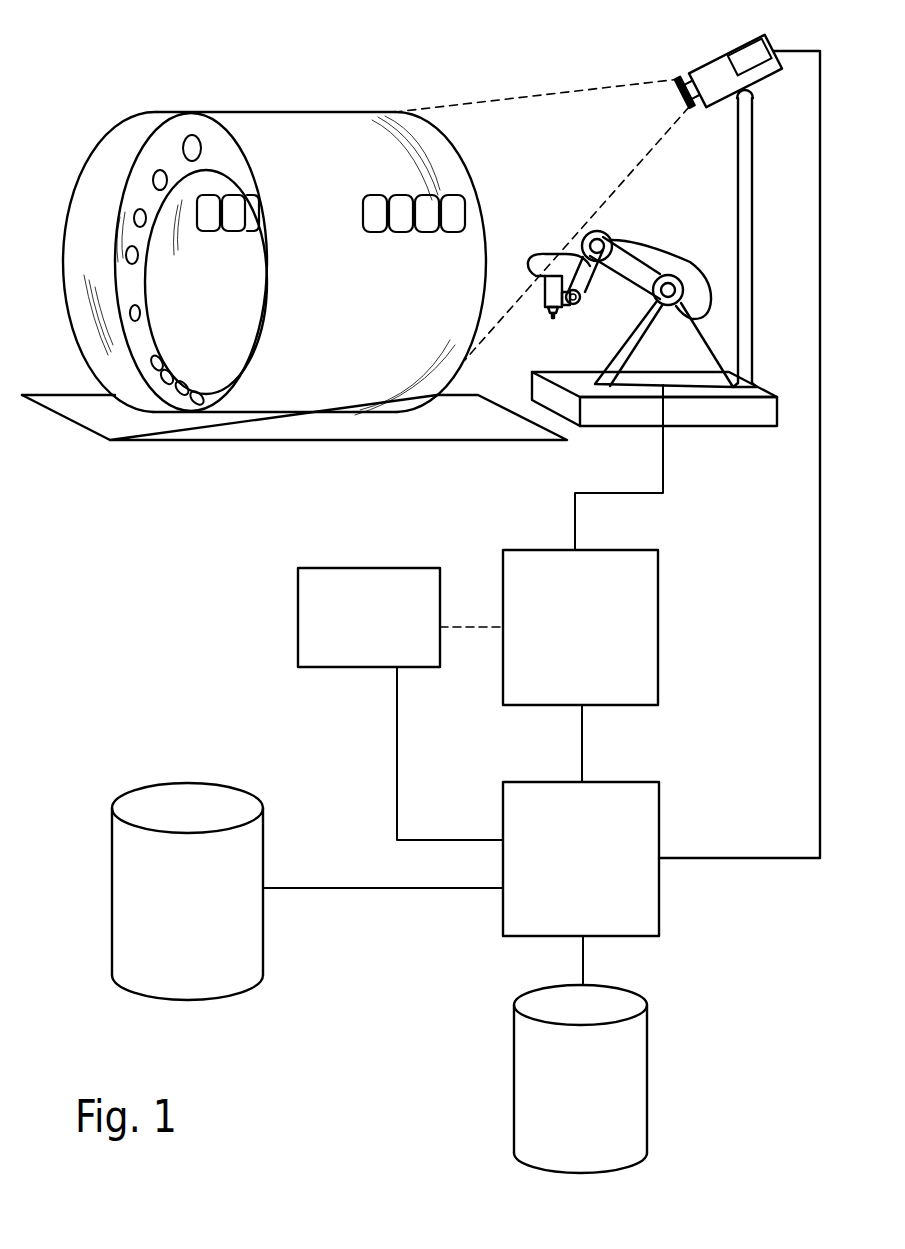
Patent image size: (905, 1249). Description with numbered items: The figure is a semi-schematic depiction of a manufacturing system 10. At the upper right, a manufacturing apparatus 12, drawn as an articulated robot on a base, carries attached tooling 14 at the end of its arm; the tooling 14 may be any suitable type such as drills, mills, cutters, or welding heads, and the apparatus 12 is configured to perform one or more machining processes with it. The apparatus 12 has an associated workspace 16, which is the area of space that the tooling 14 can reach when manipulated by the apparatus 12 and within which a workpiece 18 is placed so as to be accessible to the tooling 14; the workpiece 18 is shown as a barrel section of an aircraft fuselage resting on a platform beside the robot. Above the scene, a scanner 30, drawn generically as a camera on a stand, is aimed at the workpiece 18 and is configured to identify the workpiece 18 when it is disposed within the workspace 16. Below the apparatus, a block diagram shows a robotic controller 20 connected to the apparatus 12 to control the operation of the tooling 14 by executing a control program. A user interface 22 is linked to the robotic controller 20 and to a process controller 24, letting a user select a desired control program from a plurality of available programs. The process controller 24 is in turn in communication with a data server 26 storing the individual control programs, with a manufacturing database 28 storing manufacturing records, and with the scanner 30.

The manufacturing system 10 is at (113, 46).
The manufacturing apparatus 12 is at (620, 237).
The tooling 14 is at (540, 306).
The workspace 16 is at (238, 111).
The workpiece 18 is at (242, 441).
The robotic controller 20 is at (545, 589).
The user interface 22 is at (342, 604).
The process controller 24 is at (545, 819).
The data server 26 is at (559, 1064).
The manufacturing database 28 is at (158, 874).
The scanner 30 is at (715, 57).